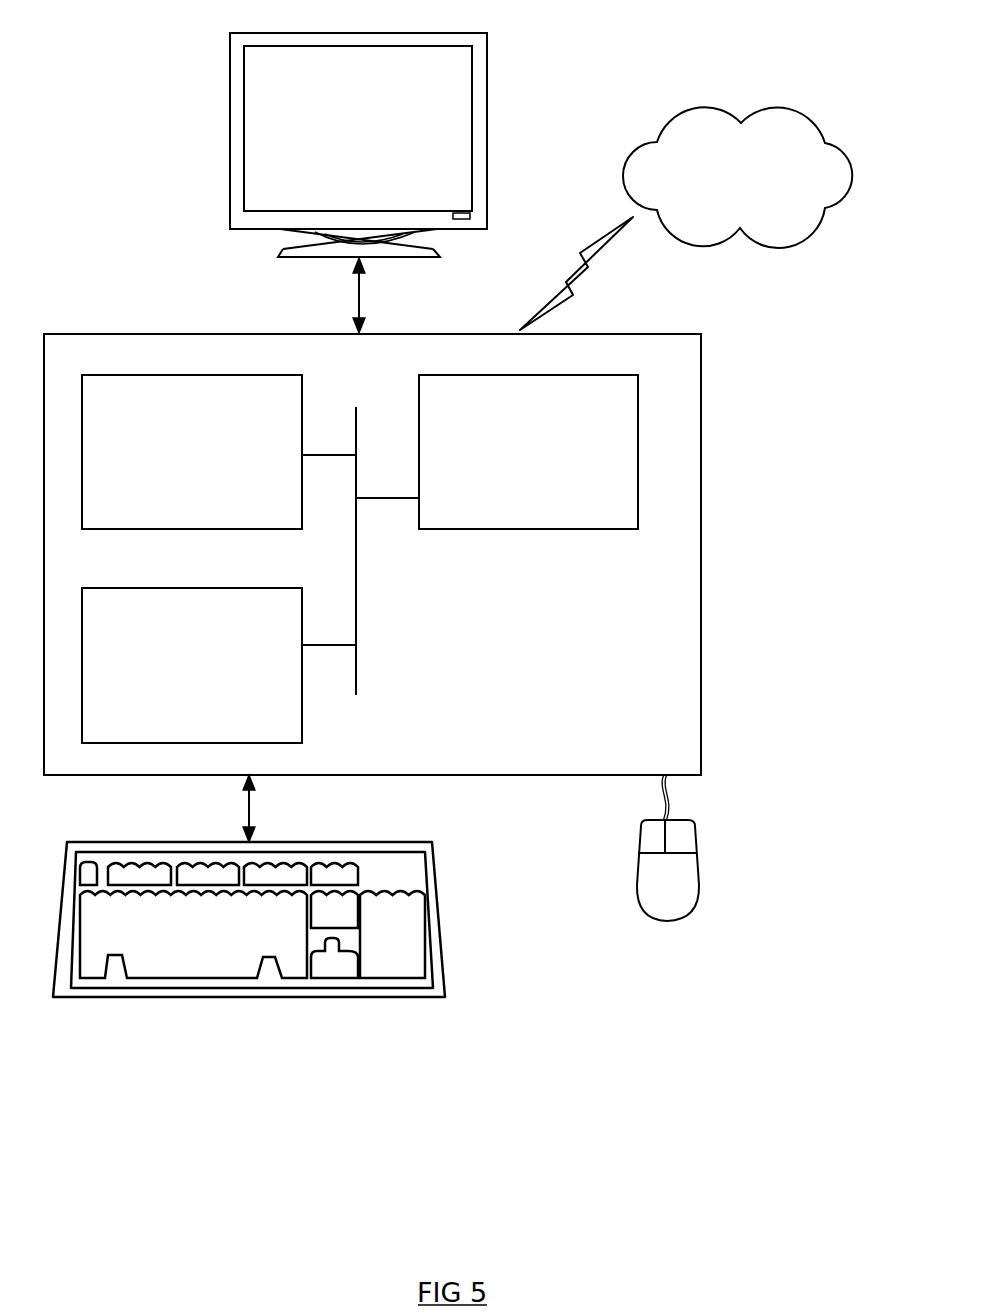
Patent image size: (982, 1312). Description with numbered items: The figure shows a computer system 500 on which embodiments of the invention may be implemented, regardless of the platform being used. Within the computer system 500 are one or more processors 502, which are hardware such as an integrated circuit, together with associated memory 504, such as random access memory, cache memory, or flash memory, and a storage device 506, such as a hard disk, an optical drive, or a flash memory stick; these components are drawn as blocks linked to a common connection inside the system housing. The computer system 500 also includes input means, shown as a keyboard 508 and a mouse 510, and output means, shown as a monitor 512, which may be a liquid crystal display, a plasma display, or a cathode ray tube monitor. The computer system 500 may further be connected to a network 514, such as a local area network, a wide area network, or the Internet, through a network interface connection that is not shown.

The computer system 500 is at (758, 342).
The processor 502 is at (526, 462).
The memory 504 is at (172, 462).
The storage device 506 is at (168, 679).
The keyboard 508 is at (163, 957).
The mouse 510 is at (645, 893).
The monitor 512 is at (340, 152).
The network 514 is at (720, 192).